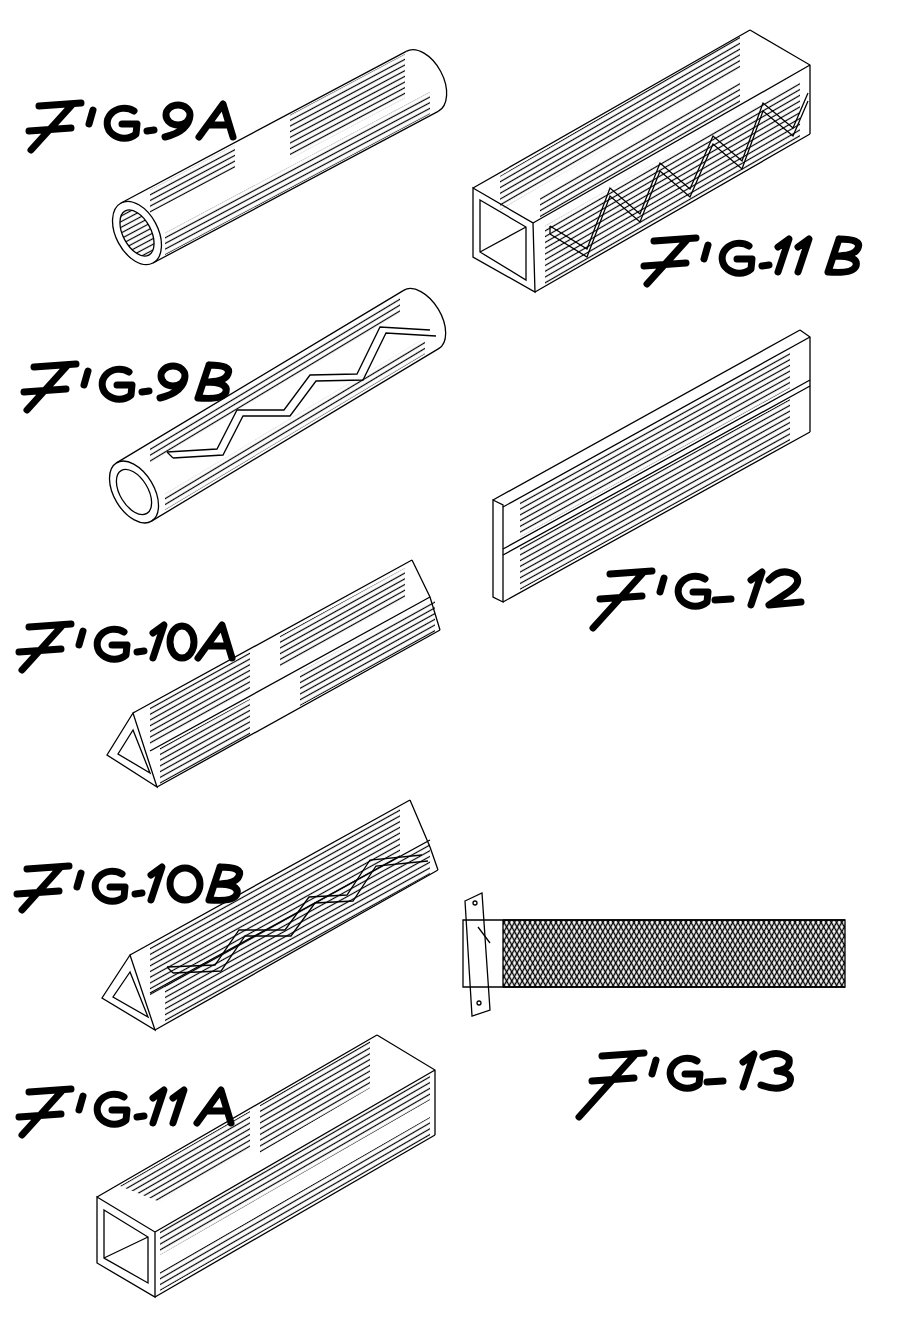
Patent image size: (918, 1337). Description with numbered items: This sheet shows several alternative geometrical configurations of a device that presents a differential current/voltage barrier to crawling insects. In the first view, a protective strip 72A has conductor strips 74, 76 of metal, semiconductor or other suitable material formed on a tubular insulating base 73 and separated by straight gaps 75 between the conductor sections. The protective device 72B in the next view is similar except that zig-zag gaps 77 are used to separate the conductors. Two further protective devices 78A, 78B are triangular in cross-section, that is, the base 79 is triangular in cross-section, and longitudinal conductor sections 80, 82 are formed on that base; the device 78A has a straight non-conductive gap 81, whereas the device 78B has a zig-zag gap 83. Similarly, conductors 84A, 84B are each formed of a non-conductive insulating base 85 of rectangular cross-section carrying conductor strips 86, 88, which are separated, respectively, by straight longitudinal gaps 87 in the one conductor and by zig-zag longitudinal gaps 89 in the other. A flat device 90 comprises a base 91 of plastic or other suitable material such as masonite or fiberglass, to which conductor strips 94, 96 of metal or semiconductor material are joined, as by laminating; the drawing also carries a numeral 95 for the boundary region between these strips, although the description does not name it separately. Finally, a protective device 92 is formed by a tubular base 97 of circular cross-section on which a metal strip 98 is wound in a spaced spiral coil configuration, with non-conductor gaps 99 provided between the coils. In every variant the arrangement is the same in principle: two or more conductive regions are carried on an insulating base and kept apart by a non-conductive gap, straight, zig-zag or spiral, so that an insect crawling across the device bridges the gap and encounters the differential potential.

In FIG. 9A, the protective strip 72A is at (302, 86).
In FIG. 9B, the protective device 72B is at (285, 352).
In FIG. 9A, the tubular insulating base 73 is at (140, 263).
In FIG. 9B, the tubular insulating base 73 is at (125, 505).
In FIG. 9A, the conductor strip 74 is at (148, 196).
In FIG. 9A, the straight gaps 75 is at (437, 64).
In FIG. 9A, the conductor strip 76 is at (240, 207).
In FIG. 9B, the zig-zag gaps 77 is at (340, 380).
In FIG. 10A, the protective device 78A is at (308, 604).
In FIG. 10B, the protective device 78B is at (278, 857).
In FIG. 10A, the base 79 is at (125, 770).
In FIG. 10B, the base 79 is at (125, 1015).
In FIG. 10A, the longitudinal conductor section 80 is at (272, 650).
In FIG. 10A, the straight non-conductive gap 81 is at (365, 635).
In FIG. 10A, the longitudinal conductor section 82 is at (292, 692).
In FIG. 10B, the zig-zag gap 83 is at (322, 900).
In FIG. 11A, the conductor 84A is at (122, 1168).
In FIG. 11B, the conductor 84B is at (618, 88).
In FIG. 11A, the non-conductive insulating base 85 is at (128, 1266).
In FIG. 11B, the non-conductive insulating base 85 is at (515, 272).
In FIG. 11A, the conductor strip 86 is at (305, 1090).
In FIG. 11A, the straight longitudinal gaps 87 is at (265, 1205).
In FIG. 11A, the conductor strip 88 is at (340, 1180).
In FIG. 11B, the zig-zag longitudinal gaps 89 is at (752, 140).
In FIG. 12, the device 90 is at (579, 446).
In FIG. 12, the base 91 is at (495, 537).
In FIG. 12, the conductor strip 94 is at (662, 435).
In FIG. 12, the groove 95 is at (743, 423).
In FIG. 12, the conductor strip 96 is at (688, 490).
In FIG. 13, the protective device 92 is at (666, 901).
In FIG. 13, the tubular base 97 is at (465, 958).
In FIG. 13, the metal strip 98 is at (518, 918).
In FIG. 13, the non-conductor gaps 99 is at (535, 918).